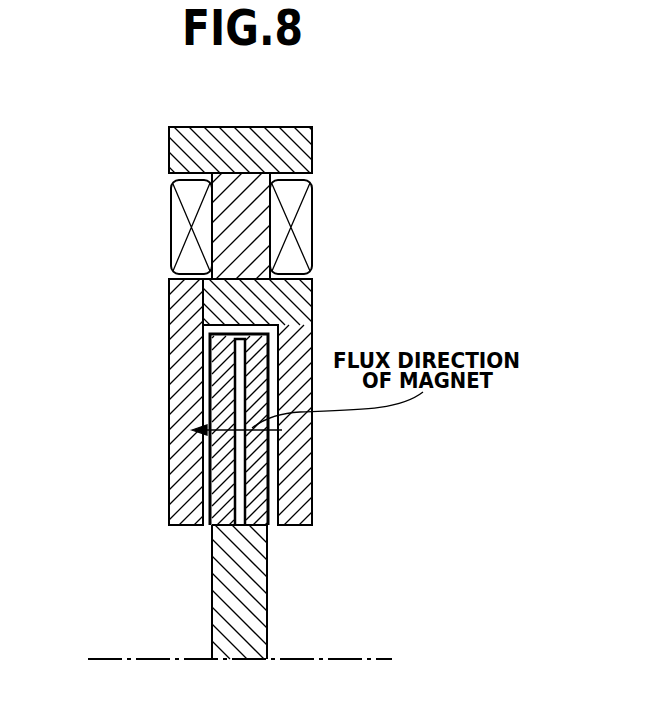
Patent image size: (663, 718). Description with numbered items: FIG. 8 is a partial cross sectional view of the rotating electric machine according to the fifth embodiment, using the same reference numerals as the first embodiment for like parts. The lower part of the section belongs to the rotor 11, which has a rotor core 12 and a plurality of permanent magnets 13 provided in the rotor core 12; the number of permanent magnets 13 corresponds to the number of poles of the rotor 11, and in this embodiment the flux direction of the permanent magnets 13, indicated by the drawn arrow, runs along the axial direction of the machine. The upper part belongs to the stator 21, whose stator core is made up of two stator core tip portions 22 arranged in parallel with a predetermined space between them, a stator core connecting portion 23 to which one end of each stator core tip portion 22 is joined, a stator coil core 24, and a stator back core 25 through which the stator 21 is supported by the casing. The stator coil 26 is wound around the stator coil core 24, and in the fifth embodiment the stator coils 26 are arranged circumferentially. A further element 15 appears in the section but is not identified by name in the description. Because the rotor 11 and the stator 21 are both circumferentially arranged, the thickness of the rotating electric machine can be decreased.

The rotor 11 is at (234, 496).
The rotor core 12 is at (247, 563).
The permanent magnets 13 is at (222, 387).
The gap 15 is at (270, 493).
The stator 21 is at (239, 321).
The stator core tip portions 22 is at (188, 457).
The stator core connecting portion 23 is at (282, 300).
The stator coil core 24 is at (235, 210).
The stator back core 25 is at (293, 153).
The stator coil 26 is at (192, 248).